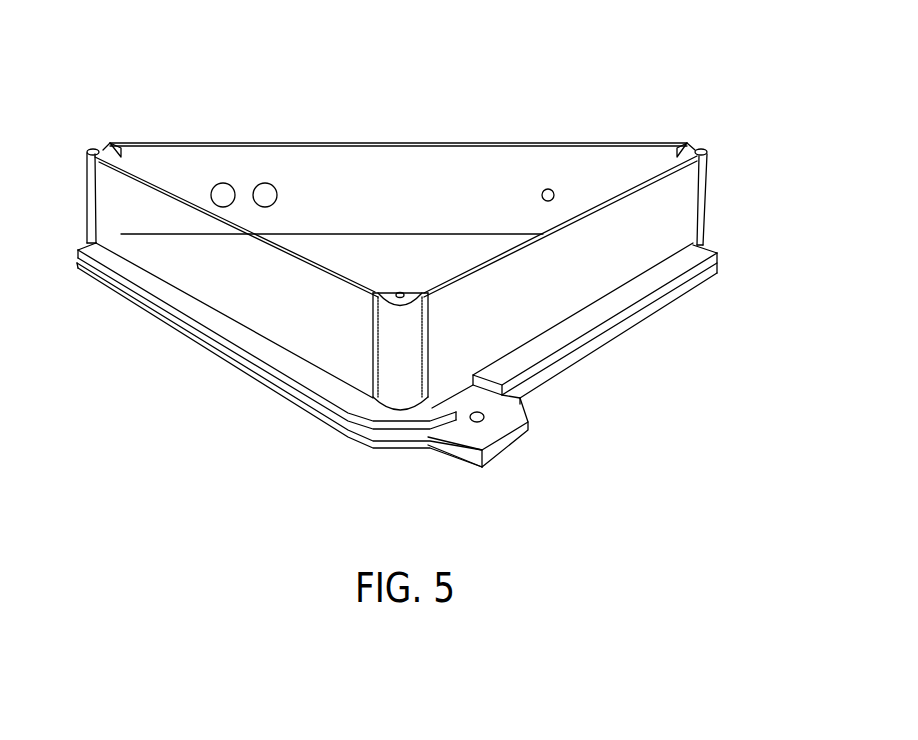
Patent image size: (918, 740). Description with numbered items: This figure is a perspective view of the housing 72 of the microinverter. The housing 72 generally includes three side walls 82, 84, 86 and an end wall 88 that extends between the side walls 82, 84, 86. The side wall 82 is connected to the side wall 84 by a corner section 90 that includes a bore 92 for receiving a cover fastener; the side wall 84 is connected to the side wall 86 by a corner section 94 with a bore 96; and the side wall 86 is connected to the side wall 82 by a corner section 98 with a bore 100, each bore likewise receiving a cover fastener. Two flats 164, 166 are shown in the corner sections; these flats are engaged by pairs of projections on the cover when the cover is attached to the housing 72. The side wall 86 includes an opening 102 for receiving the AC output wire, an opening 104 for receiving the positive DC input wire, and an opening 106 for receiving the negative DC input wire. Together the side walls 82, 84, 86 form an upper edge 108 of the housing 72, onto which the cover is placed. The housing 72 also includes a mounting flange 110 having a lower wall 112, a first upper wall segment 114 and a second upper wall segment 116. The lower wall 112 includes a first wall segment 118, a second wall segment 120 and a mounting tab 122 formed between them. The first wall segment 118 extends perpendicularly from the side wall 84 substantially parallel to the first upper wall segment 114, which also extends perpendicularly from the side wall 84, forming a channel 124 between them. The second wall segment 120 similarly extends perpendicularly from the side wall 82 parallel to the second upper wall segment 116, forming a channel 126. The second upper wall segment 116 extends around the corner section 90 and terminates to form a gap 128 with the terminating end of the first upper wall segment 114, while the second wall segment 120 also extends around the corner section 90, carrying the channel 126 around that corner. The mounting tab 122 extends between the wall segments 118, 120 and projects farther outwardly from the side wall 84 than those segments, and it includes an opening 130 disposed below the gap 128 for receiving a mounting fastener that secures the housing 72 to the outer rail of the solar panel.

The housing 72 is at (740, 75).
The side wall 82 is at (213, 287).
The side wall 84 is at (683, 234).
The side wall 86 is at (385, 157).
The end wall 88 is at (465, 247).
The corner section 90 is at (403, 390).
The bore 92 is at (398, 293).
The corner section 94 is at (707, 178).
The bore 96 is at (697, 149).
The corner section 98 is at (86, 182).
The bore 100 is at (98, 149).
The opening 102 is at (550, 190).
The opening 104 is at (226, 190).
The opening 106 is at (268, 190).
The upper edge 108 is at (523, 143).
The mounting flange 110 is at (610, 382).
The lower wall 112 is at (547, 387).
The first upper wall segment 114 is at (719, 253).
The second upper wall segment 116 is at (277, 368).
The first wall segment 118 is at (705, 277).
The second wall segment 120 is at (320, 430).
The mounting tab 122 is at (510, 438).
The channel 124 is at (630, 328).
The channel 126 is at (305, 400).
The gap 128 is at (478, 378).
The opening 130 is at (477, 424).
The flat 164 is at (377, 312).
The flat 166 is at (428, 312).